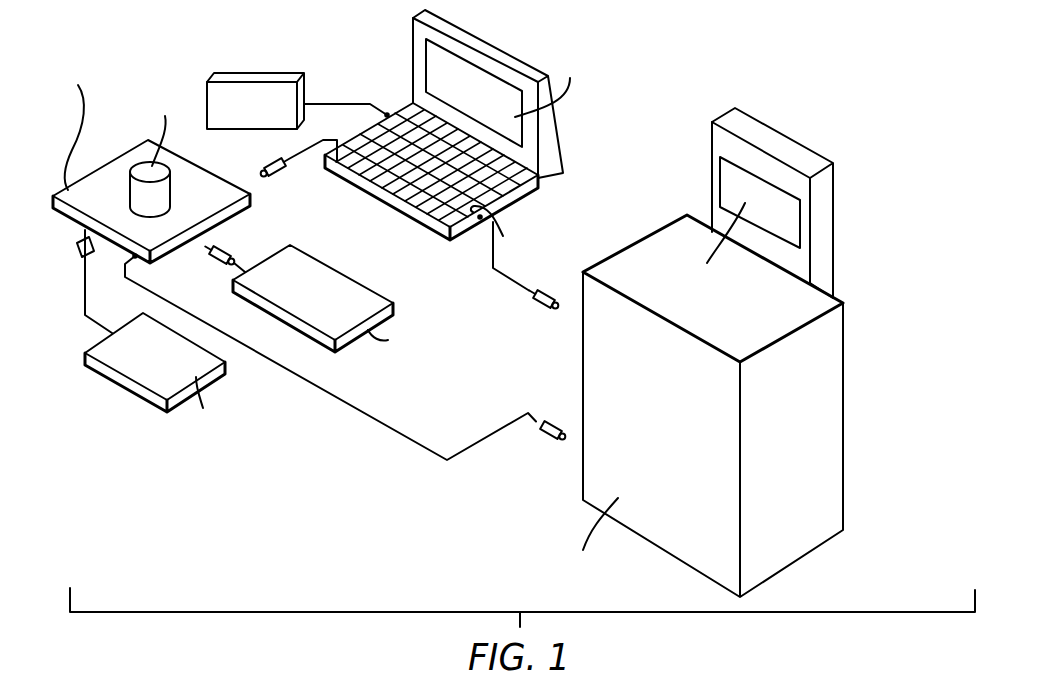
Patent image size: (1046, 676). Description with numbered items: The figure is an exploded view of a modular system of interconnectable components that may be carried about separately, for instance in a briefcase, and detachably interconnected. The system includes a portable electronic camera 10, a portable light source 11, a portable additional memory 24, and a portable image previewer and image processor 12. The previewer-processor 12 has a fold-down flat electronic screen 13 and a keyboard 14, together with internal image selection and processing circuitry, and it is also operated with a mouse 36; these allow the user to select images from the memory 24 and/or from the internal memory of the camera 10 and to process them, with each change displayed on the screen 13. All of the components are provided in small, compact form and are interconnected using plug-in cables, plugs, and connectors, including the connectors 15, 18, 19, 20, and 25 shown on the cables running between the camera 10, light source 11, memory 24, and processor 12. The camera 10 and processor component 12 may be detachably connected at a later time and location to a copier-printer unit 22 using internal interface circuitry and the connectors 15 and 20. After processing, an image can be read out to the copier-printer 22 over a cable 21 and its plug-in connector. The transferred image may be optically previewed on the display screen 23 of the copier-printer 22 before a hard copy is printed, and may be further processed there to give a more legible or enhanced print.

The portable electronic camera 10 is at (102, 190).
The portable light source 11 is at (328, 275).
The portable image previewer and image processor 12 is at (517, 132).
The fold-down flat electronic screen 13 is at (492, 82).
The keyboard 14 is at (520, 180).
The plug-in connector 15 is at (546, 440).
The plug-in connector 18 is at (232, 249).
The plug-in connector 19 is at (265, 161).
The plug-in connector 20 is at (535, 311).
The cable 21 is at (492, 257).
The copier-printer unit 22 is at (825, 388).
The display screen 23 is at (772, 193).
The portable additional memory 24 is at (106, 380).
The connector 25 is at (93, 256).
The mouse 36 is at (273, 72).